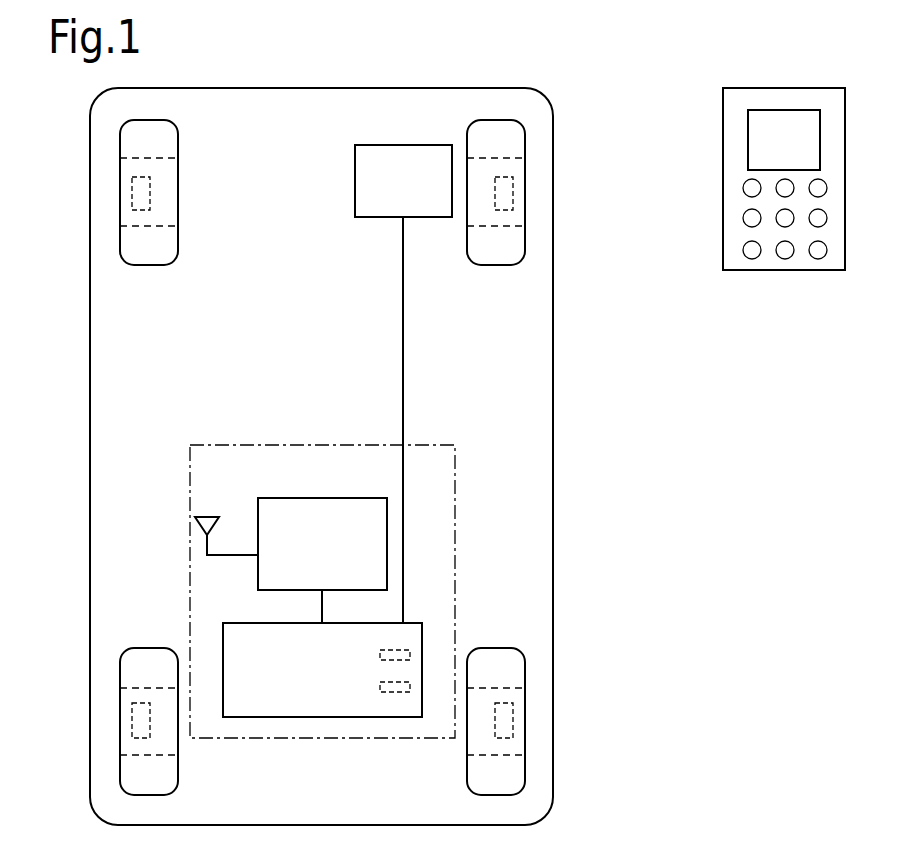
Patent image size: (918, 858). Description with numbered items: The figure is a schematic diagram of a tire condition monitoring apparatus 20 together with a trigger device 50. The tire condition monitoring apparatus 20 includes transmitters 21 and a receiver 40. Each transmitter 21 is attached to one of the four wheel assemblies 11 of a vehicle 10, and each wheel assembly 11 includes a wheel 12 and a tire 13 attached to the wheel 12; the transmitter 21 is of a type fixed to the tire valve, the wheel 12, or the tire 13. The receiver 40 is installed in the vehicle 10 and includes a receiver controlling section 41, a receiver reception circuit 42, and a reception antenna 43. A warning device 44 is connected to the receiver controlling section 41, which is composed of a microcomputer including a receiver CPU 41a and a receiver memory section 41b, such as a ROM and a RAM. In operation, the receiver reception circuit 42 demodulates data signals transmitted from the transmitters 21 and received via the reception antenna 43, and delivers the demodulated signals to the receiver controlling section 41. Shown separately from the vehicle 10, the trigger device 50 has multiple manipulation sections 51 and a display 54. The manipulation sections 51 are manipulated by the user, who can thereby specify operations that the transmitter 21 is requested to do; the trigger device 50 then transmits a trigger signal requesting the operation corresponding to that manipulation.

The vehicle 10 is at (556, 102).
The wheel assembly 11 is at (322, 467).
The wheel 12 is at (128, 228).
The tire 13 is at (138, 265).
The tire condition monitoring apparatus 20 is at (270, 410).
The transmitter 21 is at (46, 287).
The receiver 40 is at (190, 600).
The receiver controlling section 41 is at (237, 623).
The receiver CPU 41a is at (410, 650).
The receiver memory section 41b is at (393, 692).
The receiver reception circuit 42 is at (290, 498).
The reception antenna 43 is at (212, 517).
The warning device 44 is at (404, 145).
The trigger device 50 is at (776, 213).
The manipulation section 51 is at (752, 250).
The display 54 is at (756, 140).